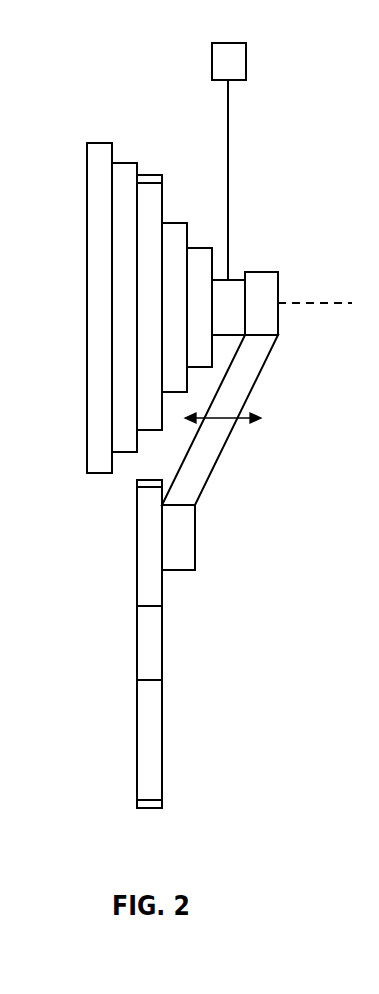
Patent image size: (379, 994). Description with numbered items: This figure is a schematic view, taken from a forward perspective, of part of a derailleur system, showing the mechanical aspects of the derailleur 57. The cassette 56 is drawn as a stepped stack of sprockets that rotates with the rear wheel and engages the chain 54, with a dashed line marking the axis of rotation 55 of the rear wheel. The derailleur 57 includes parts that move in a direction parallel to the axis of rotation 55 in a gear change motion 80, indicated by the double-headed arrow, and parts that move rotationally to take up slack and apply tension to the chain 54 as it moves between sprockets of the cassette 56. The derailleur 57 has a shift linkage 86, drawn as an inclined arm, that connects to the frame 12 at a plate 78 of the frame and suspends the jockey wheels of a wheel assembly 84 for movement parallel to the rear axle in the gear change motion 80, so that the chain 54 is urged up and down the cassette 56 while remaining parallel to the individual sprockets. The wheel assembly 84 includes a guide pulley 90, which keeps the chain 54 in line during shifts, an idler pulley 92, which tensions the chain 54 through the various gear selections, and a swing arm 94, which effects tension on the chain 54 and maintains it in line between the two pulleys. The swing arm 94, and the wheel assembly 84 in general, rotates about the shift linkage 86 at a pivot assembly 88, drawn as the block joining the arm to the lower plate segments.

The frame 12 is at (246, 62).
The chain 54 is at (150, 175).
The axis of rotation 55 is at (298, 302).
The cassette 56 is at (100, 143).
The derailleur 57 is at (273, 361).
The plate 78 is at (242, 280).
The gear change motion 80 is at (243, 418).
The wheel assembly 84 is at (193, 632).
The shift linkage 86 is at (224, 460).
The pivot assembly 88 is at (195, 537).
The guide pulley 90 is at (137, 547).
The idler pulley 92 is at (162, 740).
The swing arm 94 is at (162, 665).